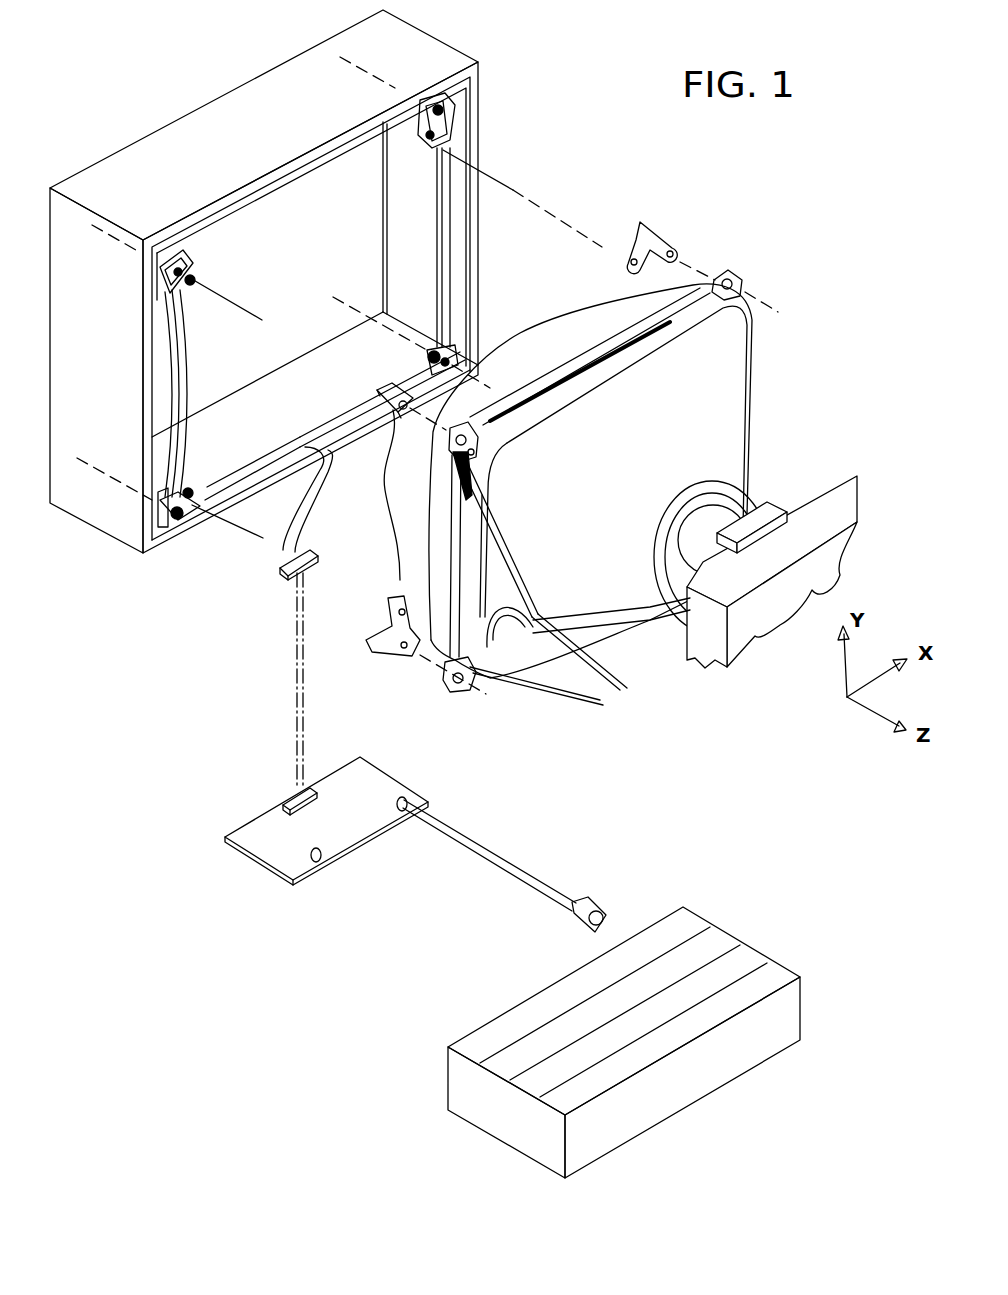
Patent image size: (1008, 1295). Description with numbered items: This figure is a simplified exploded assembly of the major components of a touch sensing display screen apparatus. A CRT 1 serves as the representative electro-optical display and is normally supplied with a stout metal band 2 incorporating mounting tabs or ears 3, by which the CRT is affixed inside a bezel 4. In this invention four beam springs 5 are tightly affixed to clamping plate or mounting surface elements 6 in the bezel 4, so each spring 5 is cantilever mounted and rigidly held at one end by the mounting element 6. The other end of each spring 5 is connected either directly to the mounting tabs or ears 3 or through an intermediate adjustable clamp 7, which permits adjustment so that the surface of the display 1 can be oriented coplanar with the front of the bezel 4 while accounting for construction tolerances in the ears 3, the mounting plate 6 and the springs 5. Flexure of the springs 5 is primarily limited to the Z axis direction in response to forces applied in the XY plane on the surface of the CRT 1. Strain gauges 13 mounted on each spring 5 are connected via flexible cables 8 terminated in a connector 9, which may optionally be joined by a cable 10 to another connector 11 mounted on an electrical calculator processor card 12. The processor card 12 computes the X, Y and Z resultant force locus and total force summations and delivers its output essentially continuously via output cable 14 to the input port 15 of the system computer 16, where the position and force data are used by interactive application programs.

The CRT 1 is at (733, 407).
The metal band 2 is at (600, 338).
The mounting tabs or ears 3 is at (733, 273).
The bezel 4 is at (212, 118).
The beam springs 5 is at (430, 158).
The clamping plate or mounting surface elements 6 is at (455, 101).
The adjustable clamp 7 is at (638, 228).
The flexible cables 8 is at (183, 372).
The connector 9 is at (280, 572).
The cable 10 is at (293, 675).
The connector 11 is at (287, 797).
The electrical calculator processor card 12 is at (263, 847).
The strain gauges 13 is at (427, 110).
The output cable 14 is at (495, 853).
The input port 15 is at (620, 928).
The system computer 16 is at (760, 950).